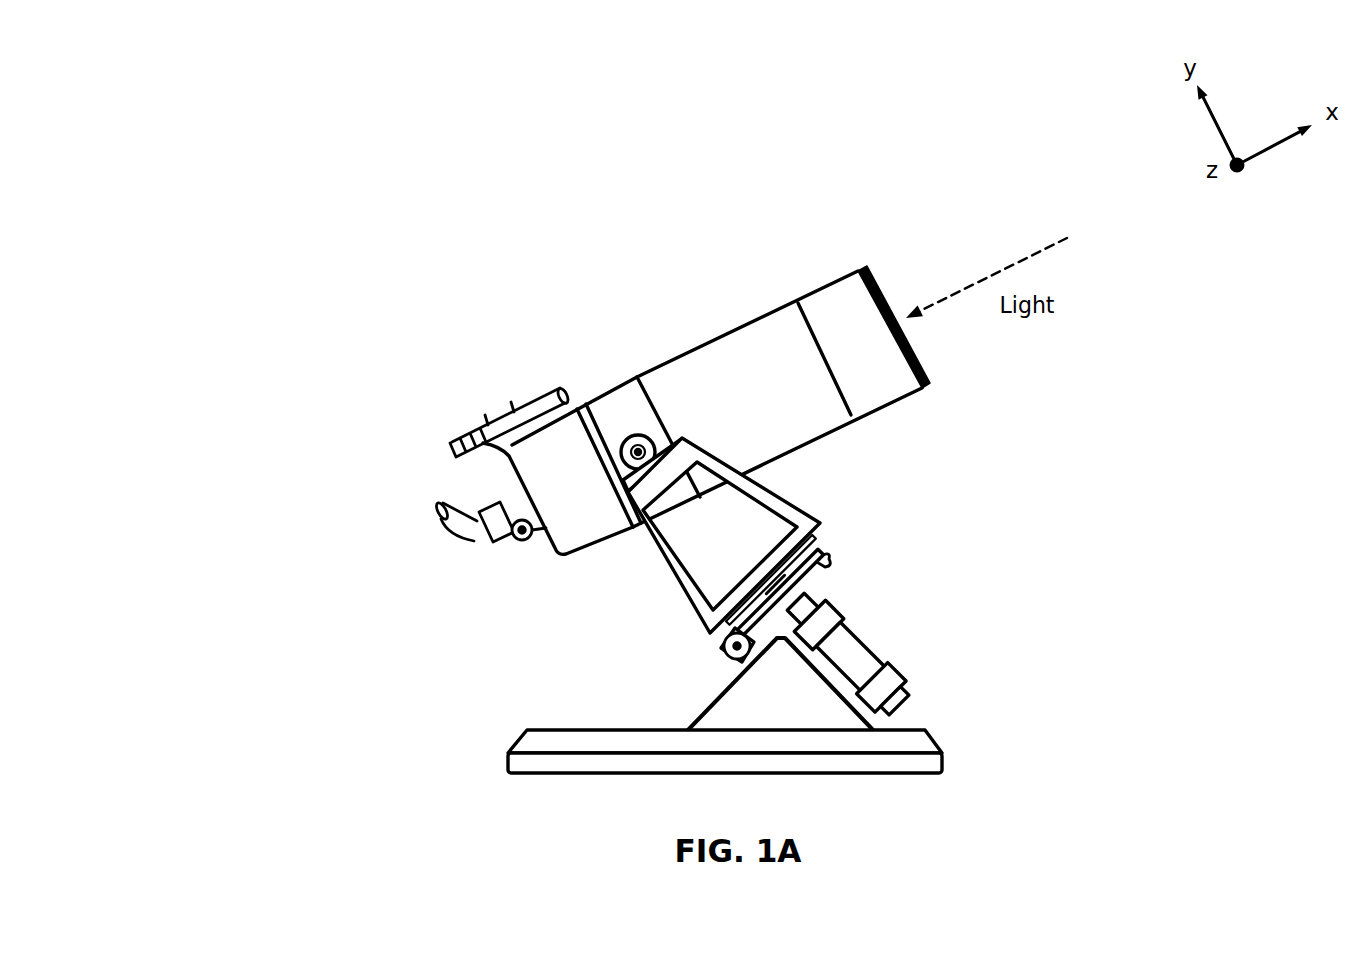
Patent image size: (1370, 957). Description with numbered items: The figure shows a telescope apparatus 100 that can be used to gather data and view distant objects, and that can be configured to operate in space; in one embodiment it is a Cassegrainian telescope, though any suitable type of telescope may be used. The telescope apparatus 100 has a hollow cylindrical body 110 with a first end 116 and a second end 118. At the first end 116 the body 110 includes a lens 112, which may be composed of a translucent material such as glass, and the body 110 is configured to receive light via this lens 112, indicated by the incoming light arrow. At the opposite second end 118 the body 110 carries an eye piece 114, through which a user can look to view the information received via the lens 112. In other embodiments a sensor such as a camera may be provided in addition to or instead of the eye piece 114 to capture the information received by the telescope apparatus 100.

The telescope apparatus 100 is at (263, 144).
The body 110 is at (865, 393).
The lens 112 is at (866, 272).
The eye piece 114 is at (497, 537).
The first end 116 is at (840, 325).
The second end 118 is at (563, 490).